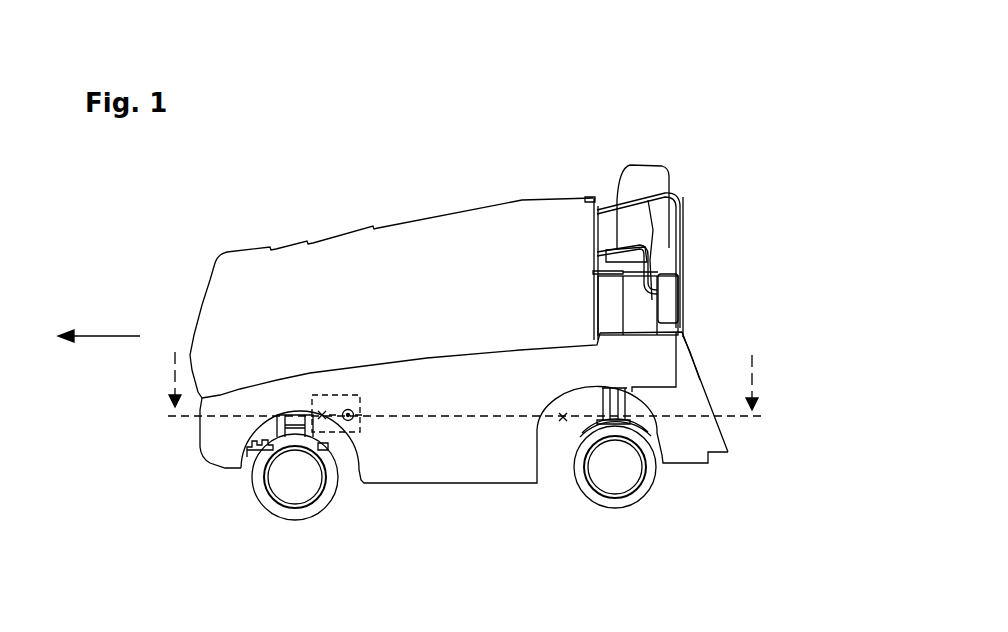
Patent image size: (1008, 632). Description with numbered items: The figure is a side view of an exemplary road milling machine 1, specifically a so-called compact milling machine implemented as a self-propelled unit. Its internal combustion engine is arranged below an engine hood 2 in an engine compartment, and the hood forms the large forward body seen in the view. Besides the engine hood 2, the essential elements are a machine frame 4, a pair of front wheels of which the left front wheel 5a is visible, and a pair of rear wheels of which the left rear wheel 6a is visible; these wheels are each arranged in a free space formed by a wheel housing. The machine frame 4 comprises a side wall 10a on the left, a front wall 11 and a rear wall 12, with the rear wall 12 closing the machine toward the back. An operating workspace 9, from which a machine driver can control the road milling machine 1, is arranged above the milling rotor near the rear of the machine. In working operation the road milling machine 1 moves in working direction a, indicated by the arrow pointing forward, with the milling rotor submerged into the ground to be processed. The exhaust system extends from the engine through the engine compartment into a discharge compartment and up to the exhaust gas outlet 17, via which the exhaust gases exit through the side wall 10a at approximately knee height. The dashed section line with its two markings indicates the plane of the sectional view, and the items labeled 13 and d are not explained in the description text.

The road milling machine 1 is at (613, 106).
The engine hood 2 is at (243, 300).
The machine frame 4 is at (655, 362).
The front wheel 5a is at (303, 490).
The rear wheel 6a is at (633, 490).
The operating workspace 9 is at (643, 217).
The side wall 10a is at (432, 455).
The front wall 11 is at (197, 428).
The rear wall 12 is at (700, 352).
The sensor bracket 13 is at (247, 460).
The exhaust gas outlet 17 is at (352, 422).
The working direction a is at (87, 336).
The distance d is at (339, 396).